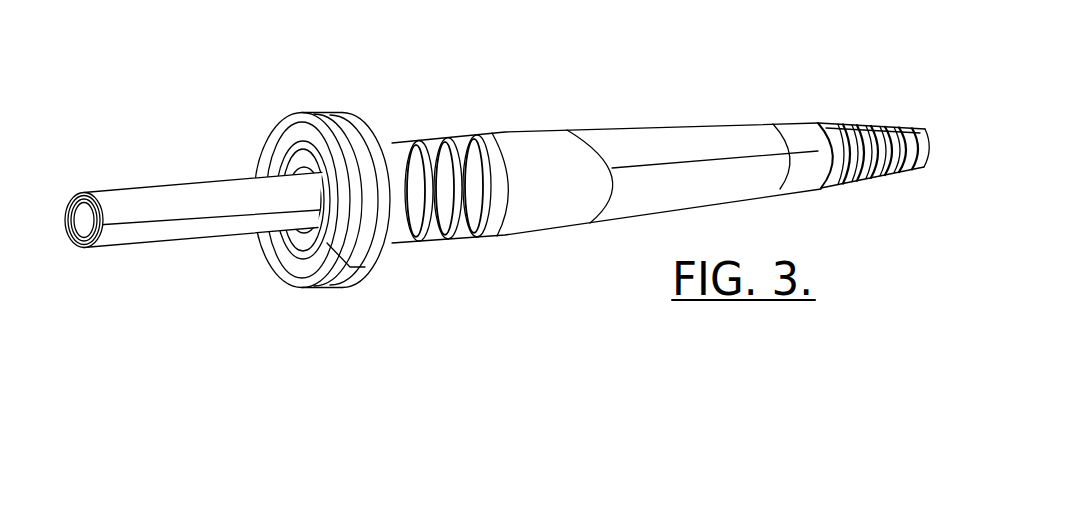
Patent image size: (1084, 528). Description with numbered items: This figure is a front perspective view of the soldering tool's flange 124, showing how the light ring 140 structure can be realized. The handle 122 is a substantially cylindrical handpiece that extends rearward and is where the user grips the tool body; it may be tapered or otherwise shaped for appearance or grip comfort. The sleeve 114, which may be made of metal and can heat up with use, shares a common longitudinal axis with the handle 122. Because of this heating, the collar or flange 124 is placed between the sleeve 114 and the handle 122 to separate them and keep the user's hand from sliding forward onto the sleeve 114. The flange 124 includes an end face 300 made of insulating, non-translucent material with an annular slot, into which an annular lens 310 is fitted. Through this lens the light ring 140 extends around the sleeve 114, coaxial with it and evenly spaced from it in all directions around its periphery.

The sleeve 114 is at (193, 193).
The handle 122 is at (660, 167).
The flange 124 is at (377, 184).
The light ring 140 is at (243, 177).
The end face 300 is at (292, 234).
The annular lens 310 is at (326, 148).